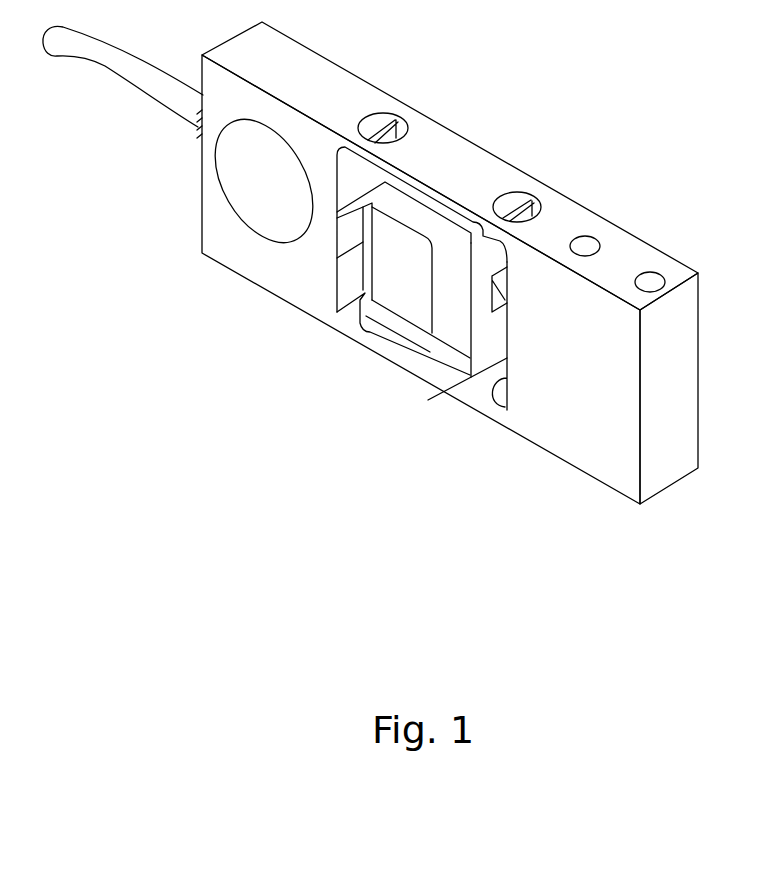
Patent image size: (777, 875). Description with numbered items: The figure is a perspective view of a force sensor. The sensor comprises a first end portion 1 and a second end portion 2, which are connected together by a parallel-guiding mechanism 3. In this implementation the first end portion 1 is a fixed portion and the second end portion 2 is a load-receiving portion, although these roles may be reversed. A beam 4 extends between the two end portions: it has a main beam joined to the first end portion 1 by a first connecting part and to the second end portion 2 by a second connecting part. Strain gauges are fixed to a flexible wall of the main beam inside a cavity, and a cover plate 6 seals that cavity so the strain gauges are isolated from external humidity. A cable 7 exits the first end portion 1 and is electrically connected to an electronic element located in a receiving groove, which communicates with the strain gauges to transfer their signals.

The first end portion 1 is at (232, 253).
The second end portion 2 is at (603, 473).
The parallel-guiding mechanism 3 is at (460, 165).
The beam 4 is at (448, 343).
The cover plate 6 is at (408, 297).
The cable 7 is at (163, 91).